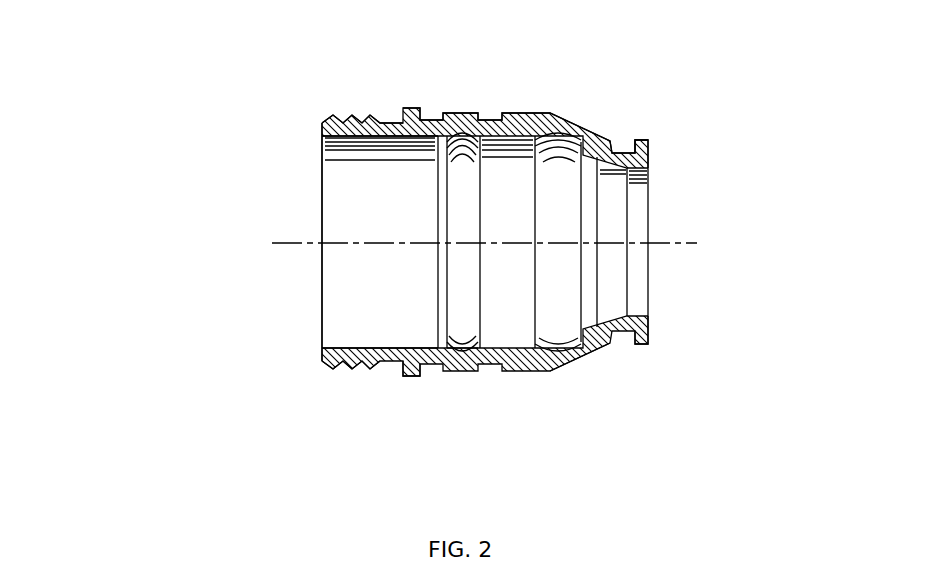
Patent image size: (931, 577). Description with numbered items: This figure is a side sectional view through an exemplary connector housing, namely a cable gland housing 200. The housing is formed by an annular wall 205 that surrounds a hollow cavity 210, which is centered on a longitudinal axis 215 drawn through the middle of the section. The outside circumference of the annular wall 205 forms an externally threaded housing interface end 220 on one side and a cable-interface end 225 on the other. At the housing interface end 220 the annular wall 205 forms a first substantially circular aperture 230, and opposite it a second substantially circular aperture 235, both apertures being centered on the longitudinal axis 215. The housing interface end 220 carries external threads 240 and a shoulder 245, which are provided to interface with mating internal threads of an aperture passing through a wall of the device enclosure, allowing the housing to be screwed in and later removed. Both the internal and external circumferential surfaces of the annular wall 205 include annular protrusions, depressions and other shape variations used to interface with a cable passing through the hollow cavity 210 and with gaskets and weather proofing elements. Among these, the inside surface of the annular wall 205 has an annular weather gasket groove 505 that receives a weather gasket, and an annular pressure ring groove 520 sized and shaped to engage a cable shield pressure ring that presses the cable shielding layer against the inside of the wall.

The cable gland housing 200 is at (130, 140).
The annular wall 205 is at (650, 153).
The hollow cavity 210 is at (373, 210).
The longitudinal axis 215 is at (660, 245).
The housing interface end 220 is at (402, 103).
The cable-interface end 225 is at (405, 103).
The first substantially circular aperture 230 is at (323, 302).
The second substantially circular aperture 235 is at (648, 298).
The external threads 240 is at (323, 367).
The shoulder 245 is at (400, 365).
The annular weather gasket groove 505 is at (572, 367).
The annular pressure ring groove 520 is at (465, 372).